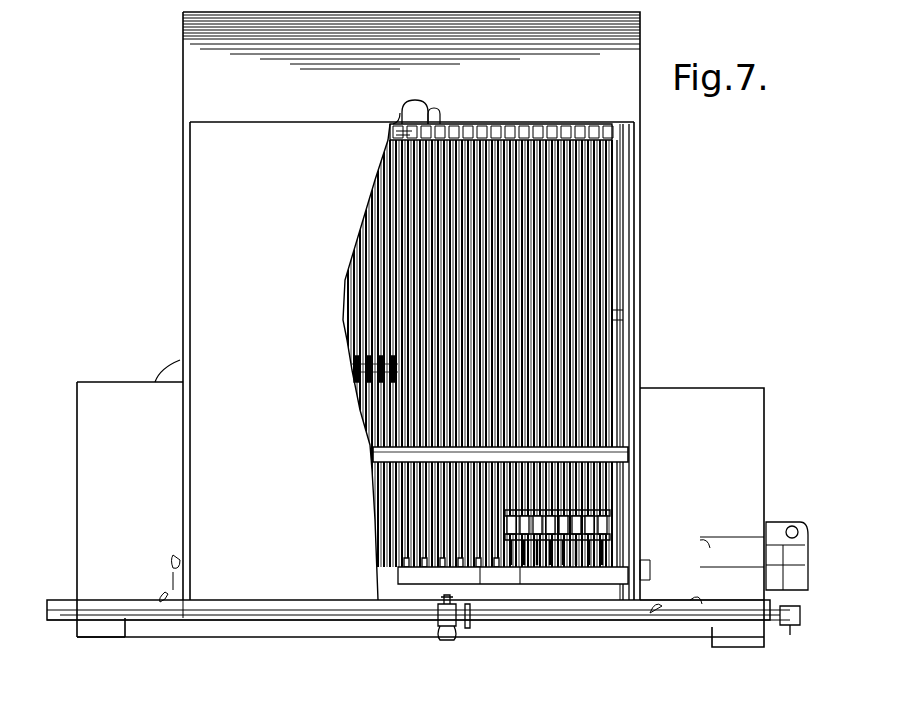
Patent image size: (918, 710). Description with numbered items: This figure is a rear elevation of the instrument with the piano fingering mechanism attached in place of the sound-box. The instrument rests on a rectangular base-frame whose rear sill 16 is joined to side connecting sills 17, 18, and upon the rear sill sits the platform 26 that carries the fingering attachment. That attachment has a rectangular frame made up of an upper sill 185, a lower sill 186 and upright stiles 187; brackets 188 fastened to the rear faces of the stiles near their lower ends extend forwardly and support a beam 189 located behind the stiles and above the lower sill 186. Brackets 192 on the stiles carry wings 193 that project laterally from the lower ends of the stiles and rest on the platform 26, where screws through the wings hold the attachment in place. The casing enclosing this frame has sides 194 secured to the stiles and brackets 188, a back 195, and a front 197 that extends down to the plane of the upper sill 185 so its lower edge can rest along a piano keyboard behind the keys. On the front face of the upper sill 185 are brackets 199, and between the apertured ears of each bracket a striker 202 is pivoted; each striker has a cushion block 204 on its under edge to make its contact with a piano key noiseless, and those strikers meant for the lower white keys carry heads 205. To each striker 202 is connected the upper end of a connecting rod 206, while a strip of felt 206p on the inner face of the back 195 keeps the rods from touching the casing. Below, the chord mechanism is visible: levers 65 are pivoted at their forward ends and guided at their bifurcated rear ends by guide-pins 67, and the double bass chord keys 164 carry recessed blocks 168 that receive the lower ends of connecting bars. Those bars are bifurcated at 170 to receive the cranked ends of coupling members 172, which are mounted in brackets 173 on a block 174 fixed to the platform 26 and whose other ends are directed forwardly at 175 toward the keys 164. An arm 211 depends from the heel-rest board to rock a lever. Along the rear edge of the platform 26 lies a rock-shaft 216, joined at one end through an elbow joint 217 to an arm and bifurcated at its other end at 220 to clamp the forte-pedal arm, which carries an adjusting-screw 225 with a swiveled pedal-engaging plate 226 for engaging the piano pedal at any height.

The rear sill 16 is at (352, 628).
The side connecting sill 17 is at (736, 637).
The side connecting sill 18 is at (108, 637).
The platform 26 is at (210, 626).
The lever 65 is at (356, 357).
The guide-pin 67 is at (358, 375).
The double bass chord key 164 is at (606, 535).
The block 168 is at (608, 525).
The bifurcation 170 is at (408, 562).
The coupling member 172 is at (522, 575).
The bracket 173 is at (494, 575).
The block 174 is at (660, 603).
The forwardly directed portion 175 is at (608, 553).
The upper sill 185 is at (400, 122).
The lower sill 186 is at (513, 587).
The stile 187 is at (625, 268).
The bracket 188 is at (626, 470).
The beam 189 is at (615, 452).
The bracket 192 is at (172, 560).
The wing 193 is at (158, 600).
The side 194 is at (183, 186).
The back 195 is at (400, 205).
The front 197 is at (411, 61).
The bracket 199 is at (468, 124).
The striker 202 is at (418, 100).
The cushion block 204 is at (434, 124).
The head 205 is at (412, 136).
The connecting rod 206 is at (378, 237).
The strip of felt 206p is at (622, 328).
The arm 211 is at (804, 522).
The rock-shaft 216 is at (556, 625).
The elbow joint 217 is at (792, 636).
The bifurcation 220 is at (437, 612).
The adjusting-screw 225 is at (440, 640).
The pedal-engaging plate 226 is at (467, 630).